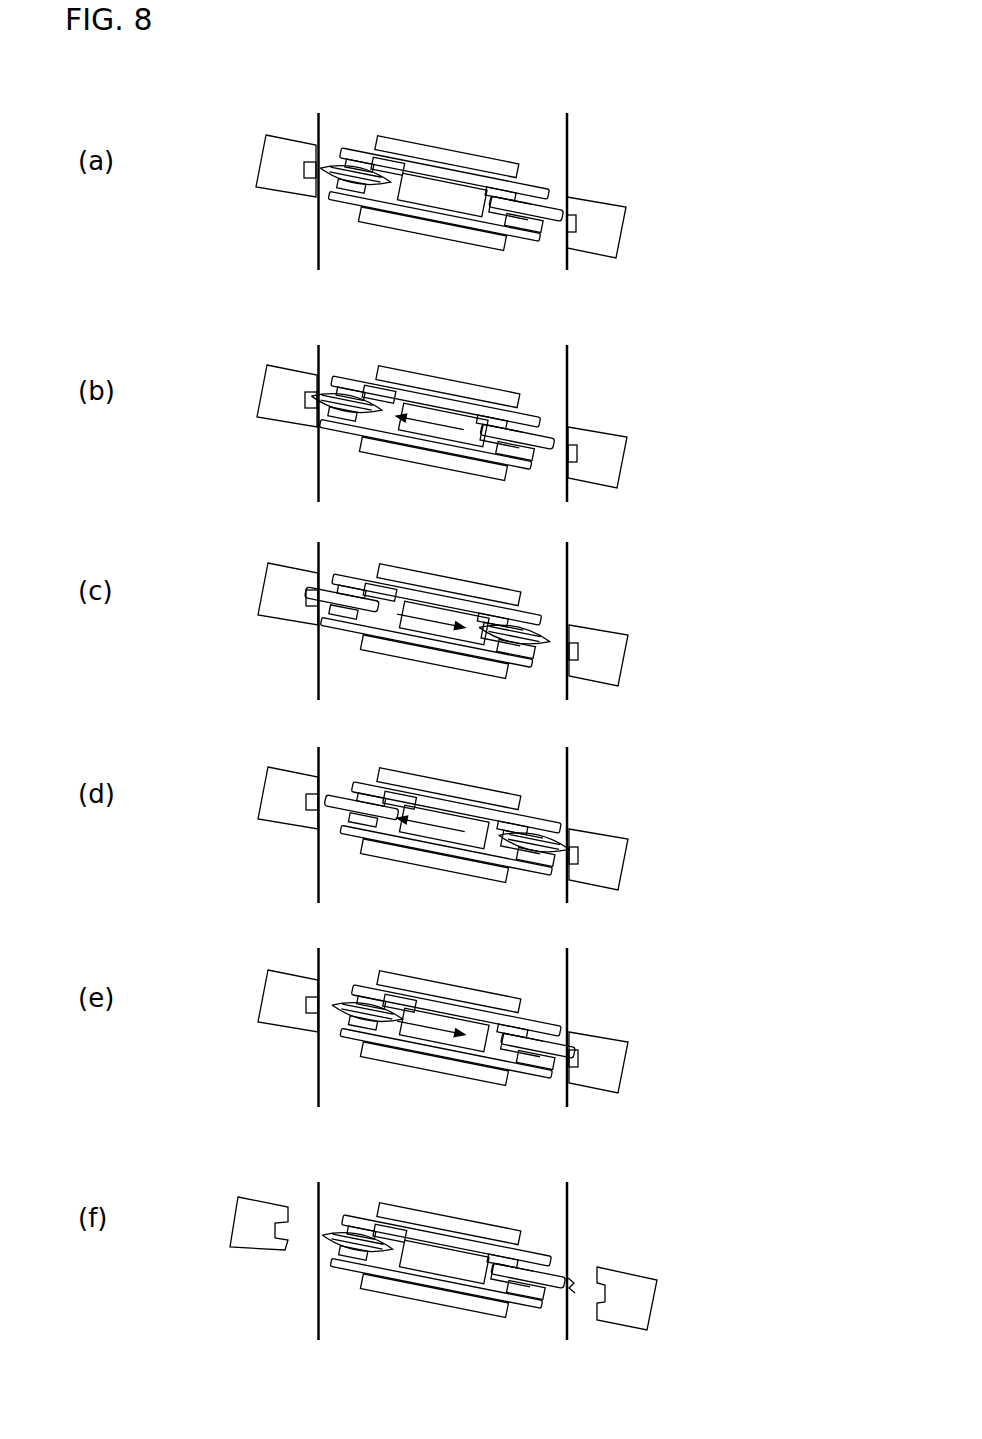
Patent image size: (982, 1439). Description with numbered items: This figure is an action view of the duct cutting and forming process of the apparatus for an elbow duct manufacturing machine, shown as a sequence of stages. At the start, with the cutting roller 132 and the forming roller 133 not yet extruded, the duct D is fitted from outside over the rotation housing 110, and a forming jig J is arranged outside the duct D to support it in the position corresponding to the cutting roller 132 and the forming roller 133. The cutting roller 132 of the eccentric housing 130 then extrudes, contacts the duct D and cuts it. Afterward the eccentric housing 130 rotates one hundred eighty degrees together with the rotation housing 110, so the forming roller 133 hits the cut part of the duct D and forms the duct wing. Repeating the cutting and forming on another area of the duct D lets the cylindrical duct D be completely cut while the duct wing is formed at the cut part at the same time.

The rotation housing 110 is at (457, 131).
The eccentric housing 130 is at (358, 130).
The cutting roller 132 is at (320, 167).
The forming roller 133 is at (557, 216).
The duct D is at (567, 147).
The forming jig J is at (605, 197).